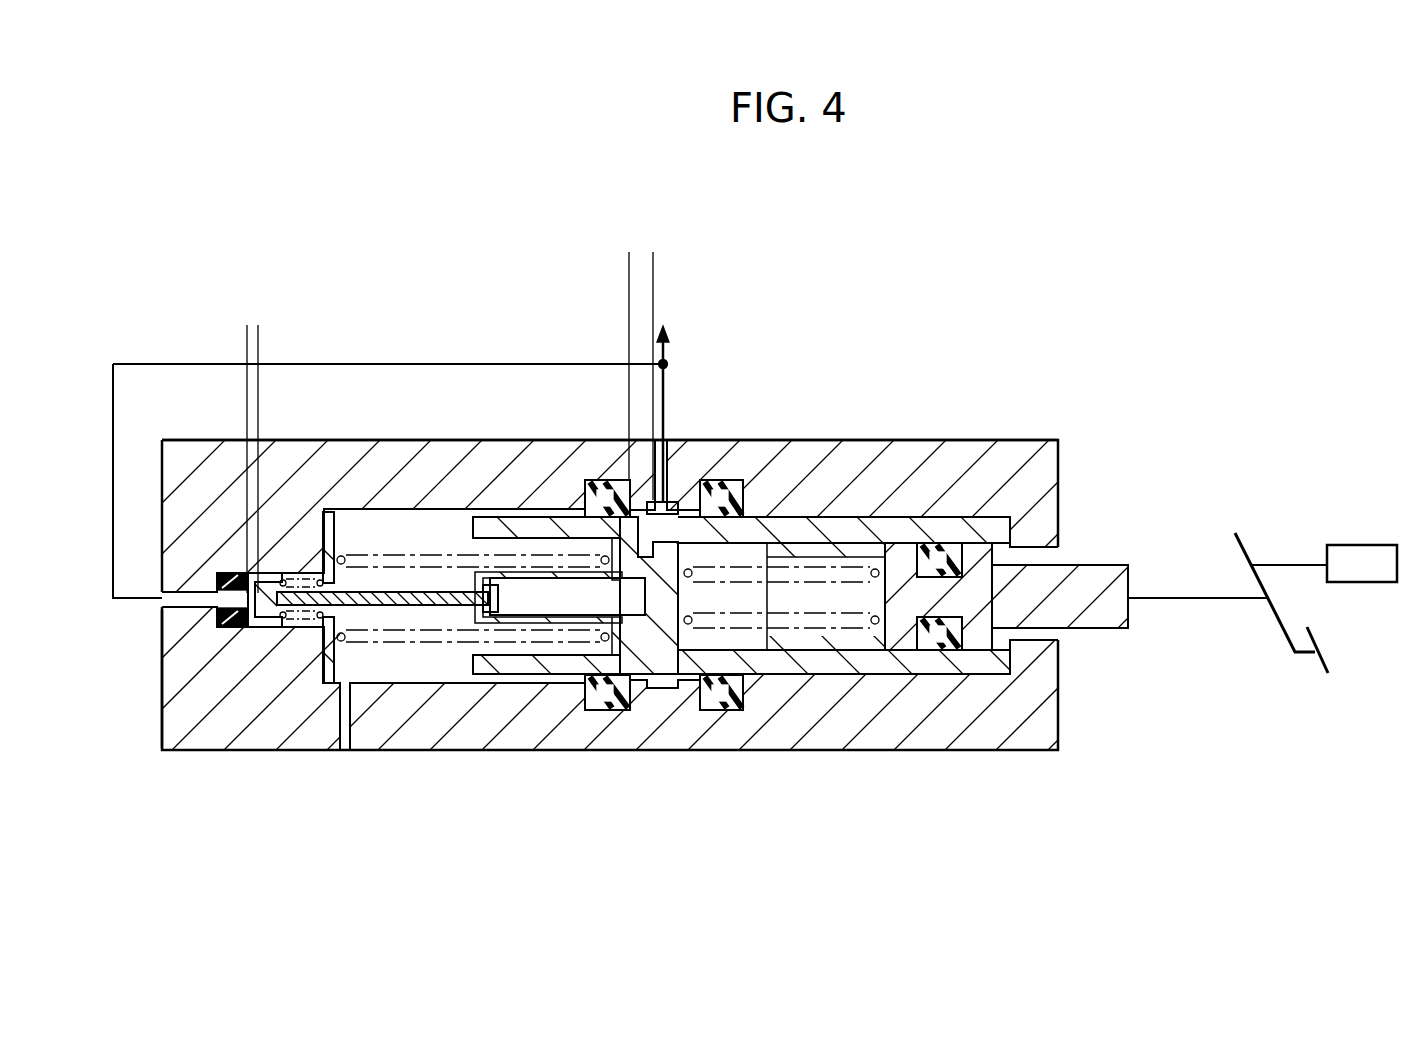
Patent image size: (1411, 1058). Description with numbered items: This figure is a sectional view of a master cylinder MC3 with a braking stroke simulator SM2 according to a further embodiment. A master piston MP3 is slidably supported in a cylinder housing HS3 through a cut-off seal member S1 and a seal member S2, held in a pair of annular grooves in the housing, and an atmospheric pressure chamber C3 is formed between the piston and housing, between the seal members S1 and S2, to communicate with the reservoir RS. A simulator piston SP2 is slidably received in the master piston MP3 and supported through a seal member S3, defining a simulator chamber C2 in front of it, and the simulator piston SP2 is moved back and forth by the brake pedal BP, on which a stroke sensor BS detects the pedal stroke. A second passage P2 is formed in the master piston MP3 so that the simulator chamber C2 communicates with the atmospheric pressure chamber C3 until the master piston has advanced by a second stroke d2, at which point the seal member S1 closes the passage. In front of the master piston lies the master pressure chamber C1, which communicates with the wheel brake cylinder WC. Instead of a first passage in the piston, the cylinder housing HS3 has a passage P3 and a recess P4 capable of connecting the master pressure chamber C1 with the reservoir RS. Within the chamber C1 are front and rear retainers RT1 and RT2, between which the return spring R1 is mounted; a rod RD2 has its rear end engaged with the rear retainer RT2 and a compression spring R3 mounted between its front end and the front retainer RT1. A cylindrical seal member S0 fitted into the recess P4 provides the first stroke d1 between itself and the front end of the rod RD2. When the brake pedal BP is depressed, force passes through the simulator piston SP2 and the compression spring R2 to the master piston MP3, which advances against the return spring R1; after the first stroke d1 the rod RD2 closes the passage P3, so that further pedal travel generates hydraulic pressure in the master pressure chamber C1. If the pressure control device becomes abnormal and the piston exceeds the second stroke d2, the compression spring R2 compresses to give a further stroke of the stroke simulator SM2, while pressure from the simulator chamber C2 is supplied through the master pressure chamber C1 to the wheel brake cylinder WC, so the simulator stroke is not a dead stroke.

The master cylinder MC3 is at (432, 406).
The cylinder housing HS3 is at (168, 668).
The passage P3 is at (160, 627).
The cylindrical seal member S0 is at (228, 627).
The recess P4 is at (250, 628).
The compression spring R3 is at (292, 628).
The rod RD2 is at (407, 606).
The front retainer RT1 is at (325, 628).
The return spring R1 is at (505, 545).
The master pressure chamber C1 is at (438, 667).
The rear retainer RT2 is at (522, 622).
The wheel brake cylinder WC is at (345, 750).
The second passage P2 is at (690, 520).
The atmospheric pressure chamber C3 is at (662, 552).
The reservoir RS is at (403, 406).
The second stroke d2 is at (692, 278).
The first stroke d1 is at (282, 350).
The seal member S1 is at (583, 705).
The seal member S2 is at (728, 706).
The simulator chamber C2 is at (753, 672).
The compression spring R2 is at (806, 575).
The master piston MP3 is at (832, 664).
The seal member S3 is at (965, 655).
The simulator piston SP2 is at (1083, 606).
The brake pedal BP is at (1328, 665).
The stroke sensor BS is at (1337, 545).
The stroke simulator SM2 is at (1006, 428).